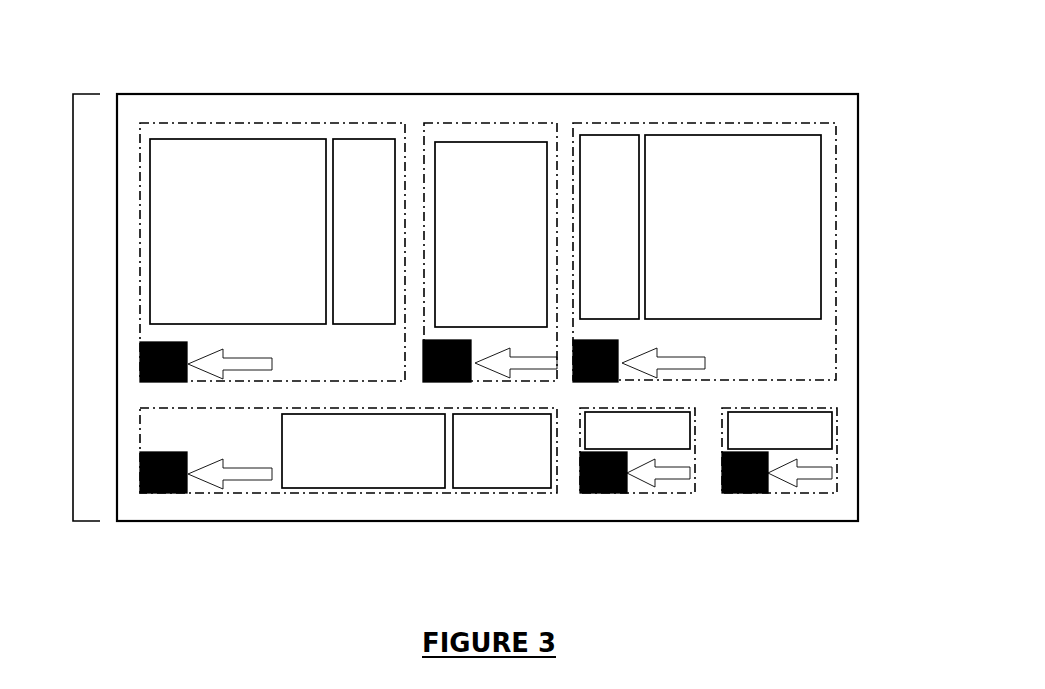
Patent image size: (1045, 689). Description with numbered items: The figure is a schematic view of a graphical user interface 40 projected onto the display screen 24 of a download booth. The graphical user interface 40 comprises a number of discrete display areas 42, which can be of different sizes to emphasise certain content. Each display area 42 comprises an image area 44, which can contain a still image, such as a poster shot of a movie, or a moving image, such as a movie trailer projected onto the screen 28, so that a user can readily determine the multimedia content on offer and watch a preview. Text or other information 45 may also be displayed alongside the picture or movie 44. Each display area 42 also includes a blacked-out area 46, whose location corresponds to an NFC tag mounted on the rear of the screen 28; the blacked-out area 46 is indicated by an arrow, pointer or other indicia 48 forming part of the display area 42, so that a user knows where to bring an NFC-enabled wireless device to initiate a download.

The display screen 24 is at (218, 76).
The screen 28 is at (420, 113).
The graphical user interface 40 is at (70, 307).
The display area 42 is at (306, 123).
The image area 44 is at (224, 250).
The text or other information 45 is at (349, 250).
The blacked-out area 46 is at (595, 340).
The indicia 48 is at (208, 360).